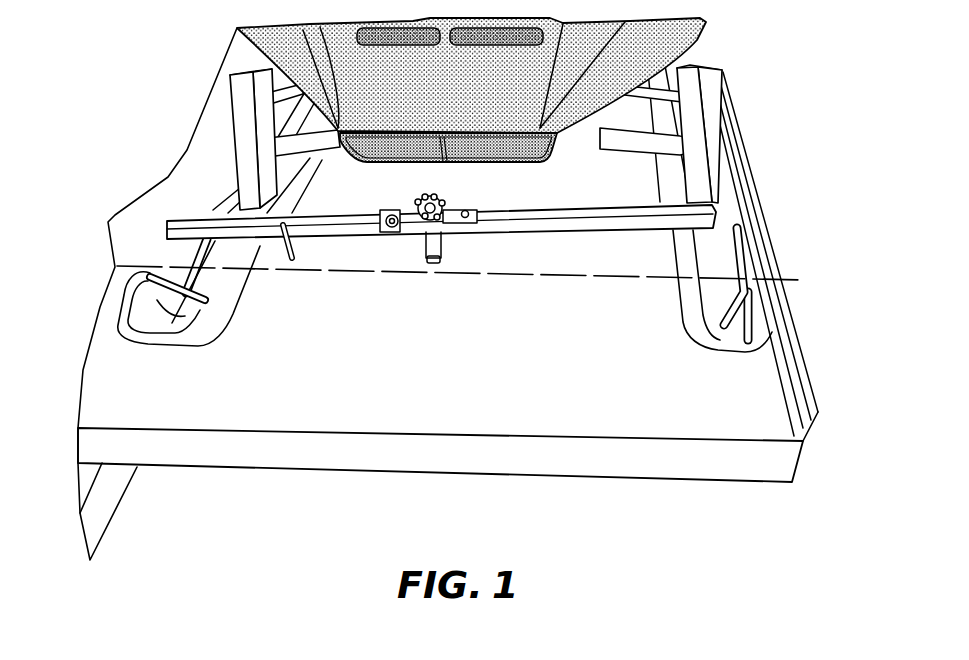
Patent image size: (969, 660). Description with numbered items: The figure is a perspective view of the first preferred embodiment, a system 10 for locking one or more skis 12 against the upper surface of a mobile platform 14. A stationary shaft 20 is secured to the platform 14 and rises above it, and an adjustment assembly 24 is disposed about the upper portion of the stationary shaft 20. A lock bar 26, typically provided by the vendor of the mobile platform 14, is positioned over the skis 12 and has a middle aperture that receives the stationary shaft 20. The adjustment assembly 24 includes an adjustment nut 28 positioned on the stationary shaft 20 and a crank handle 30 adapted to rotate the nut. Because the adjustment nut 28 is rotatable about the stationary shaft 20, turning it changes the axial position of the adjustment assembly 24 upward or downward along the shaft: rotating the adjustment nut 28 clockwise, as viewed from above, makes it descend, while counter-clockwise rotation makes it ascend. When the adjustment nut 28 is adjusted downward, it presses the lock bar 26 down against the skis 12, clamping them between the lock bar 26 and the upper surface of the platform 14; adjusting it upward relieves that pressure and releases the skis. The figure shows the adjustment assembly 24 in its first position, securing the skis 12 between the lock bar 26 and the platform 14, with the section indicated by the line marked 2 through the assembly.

The system 10 is at (738, 84).
The skis 12 is at (180, 318).
The mobile platform 14 is at (467, 351).
The stationary shaft 20 is at (426, 240).
The adjustment assembly 24 is at (458, 199).
The lock bar 26 is at (172, 177).
The adjustment nut 28 is at (418, 202).
The crank handle 30 is at (296, 262).
The section line 2- 2 is at (117, 266).